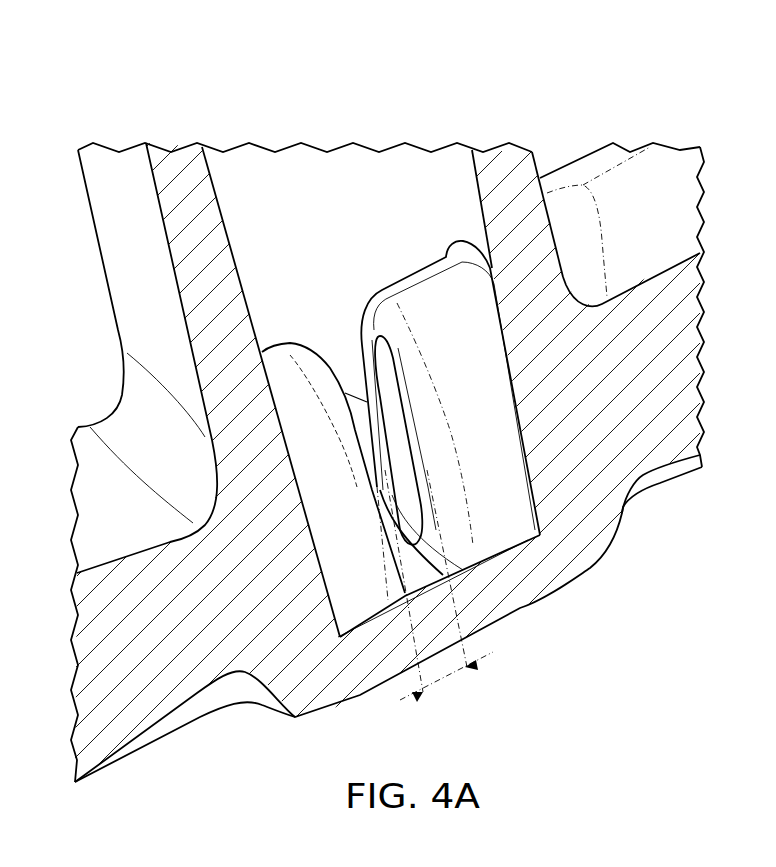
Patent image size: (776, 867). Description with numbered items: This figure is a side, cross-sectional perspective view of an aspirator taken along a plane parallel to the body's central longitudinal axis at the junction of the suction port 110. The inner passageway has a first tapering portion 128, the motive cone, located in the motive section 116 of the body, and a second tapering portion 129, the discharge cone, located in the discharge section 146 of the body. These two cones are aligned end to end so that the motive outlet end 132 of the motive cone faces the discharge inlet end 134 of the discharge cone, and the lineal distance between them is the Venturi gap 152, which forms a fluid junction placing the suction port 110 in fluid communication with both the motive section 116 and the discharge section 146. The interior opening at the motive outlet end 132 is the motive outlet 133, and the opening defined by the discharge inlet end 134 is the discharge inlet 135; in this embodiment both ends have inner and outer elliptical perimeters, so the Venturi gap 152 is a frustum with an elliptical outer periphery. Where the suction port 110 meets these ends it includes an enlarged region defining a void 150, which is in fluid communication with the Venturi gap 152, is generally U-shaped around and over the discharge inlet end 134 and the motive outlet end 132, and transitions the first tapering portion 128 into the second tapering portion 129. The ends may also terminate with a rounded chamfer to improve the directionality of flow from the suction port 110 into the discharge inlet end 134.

The suction port 110 is at (512, 160).
The motive section 116 is at (137, 715).
The first tapering portion 128 is at (322, 348).
The second tapering portion 129 is at (382, 372).
The motive outlet end 132 is at (300, 440).
The motive outlet 133 is at (320, 487).
The discharge inlet end 134 is at (488, 405).
The discharge inlet 135 is at (432, 498).
The discharge section 146 is at (683, 197).
The void 150 is at (333, 300).
The Venturi gap 152 is at (442, 680).